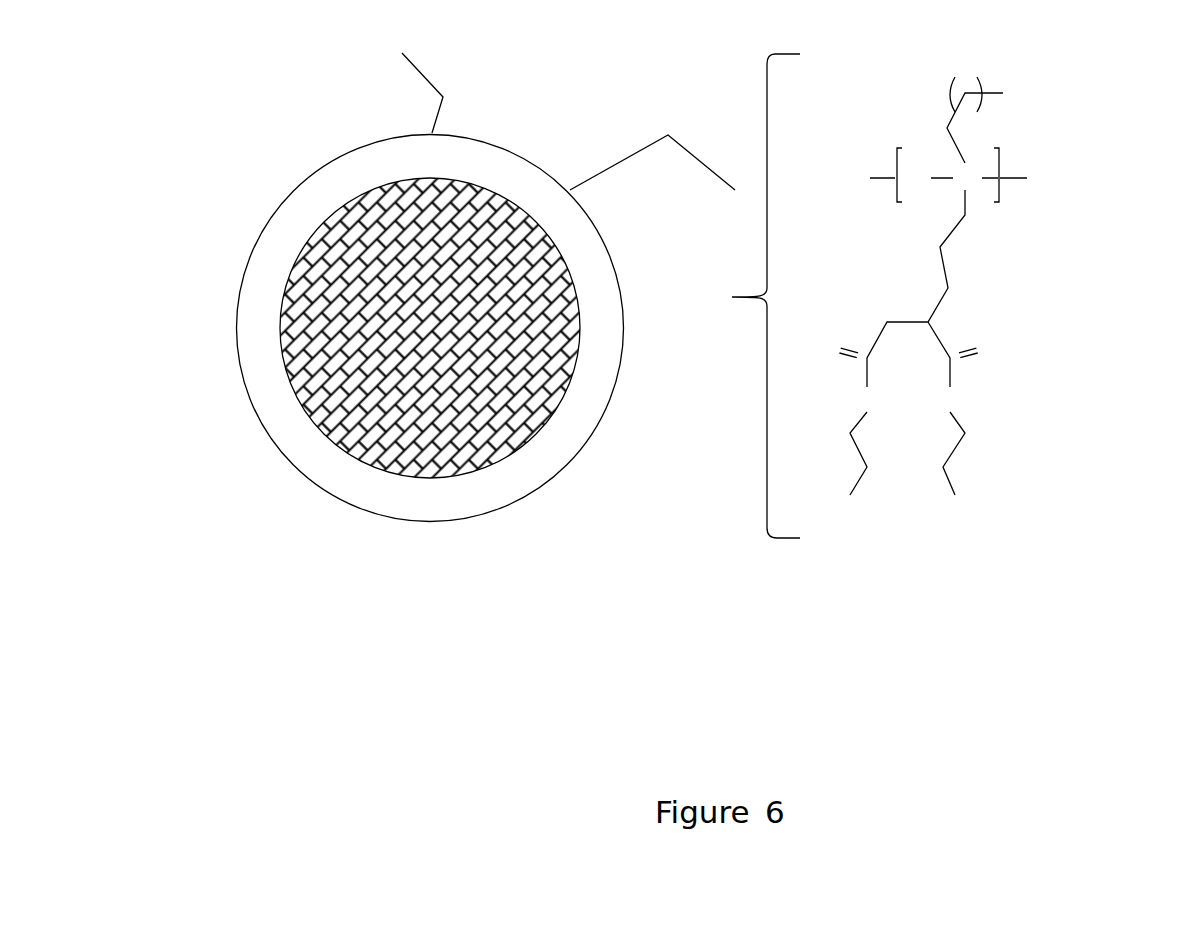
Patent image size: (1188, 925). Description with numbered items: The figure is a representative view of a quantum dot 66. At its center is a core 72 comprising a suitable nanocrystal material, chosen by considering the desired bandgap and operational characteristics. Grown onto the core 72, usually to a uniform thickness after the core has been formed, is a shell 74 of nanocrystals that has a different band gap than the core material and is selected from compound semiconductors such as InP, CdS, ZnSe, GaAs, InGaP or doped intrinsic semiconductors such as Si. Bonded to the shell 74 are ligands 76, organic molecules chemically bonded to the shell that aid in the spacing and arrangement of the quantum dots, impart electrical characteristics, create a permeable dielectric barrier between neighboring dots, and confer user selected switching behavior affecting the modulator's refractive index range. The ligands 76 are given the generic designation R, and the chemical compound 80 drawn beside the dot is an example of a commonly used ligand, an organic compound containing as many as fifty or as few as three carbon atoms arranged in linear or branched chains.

The quantum dot 66 is at (220, 433).
The core 72 is at (453, 387).
The shell 74 is at (320, 487).
The ligands 76 is at (373, 40).
The chemical compound 80 is at (1022, 377).